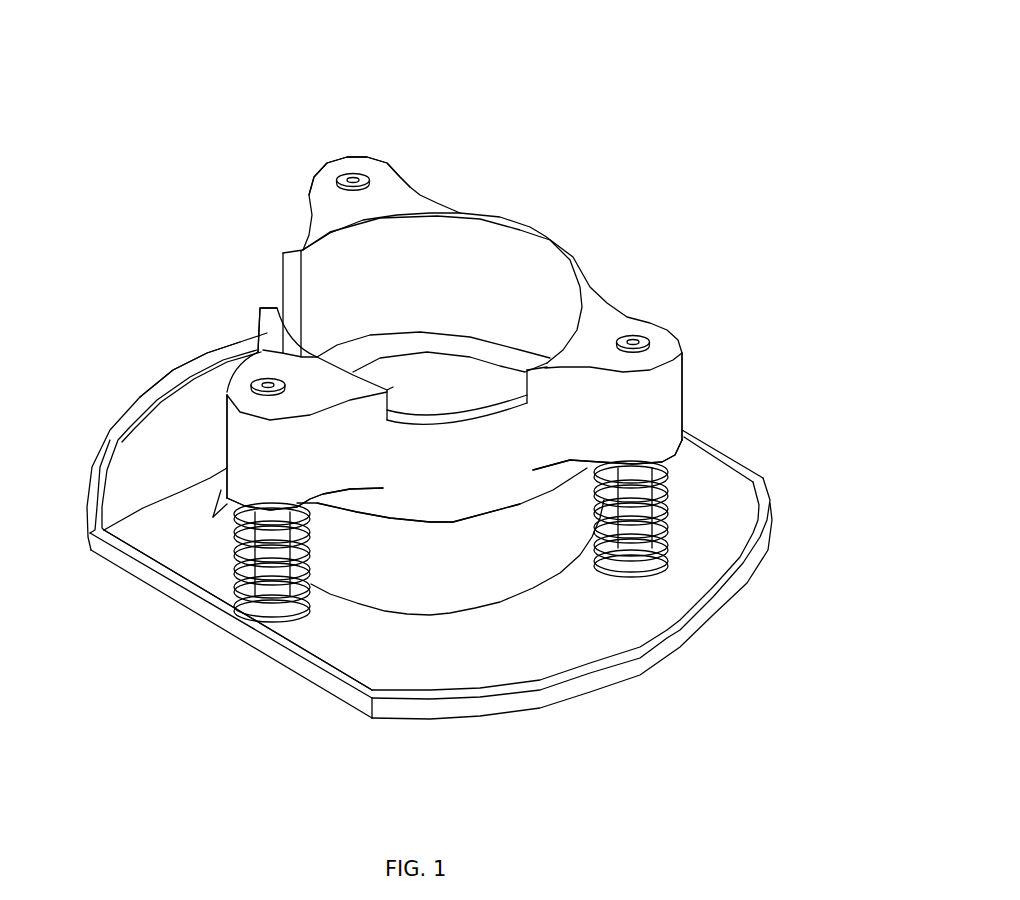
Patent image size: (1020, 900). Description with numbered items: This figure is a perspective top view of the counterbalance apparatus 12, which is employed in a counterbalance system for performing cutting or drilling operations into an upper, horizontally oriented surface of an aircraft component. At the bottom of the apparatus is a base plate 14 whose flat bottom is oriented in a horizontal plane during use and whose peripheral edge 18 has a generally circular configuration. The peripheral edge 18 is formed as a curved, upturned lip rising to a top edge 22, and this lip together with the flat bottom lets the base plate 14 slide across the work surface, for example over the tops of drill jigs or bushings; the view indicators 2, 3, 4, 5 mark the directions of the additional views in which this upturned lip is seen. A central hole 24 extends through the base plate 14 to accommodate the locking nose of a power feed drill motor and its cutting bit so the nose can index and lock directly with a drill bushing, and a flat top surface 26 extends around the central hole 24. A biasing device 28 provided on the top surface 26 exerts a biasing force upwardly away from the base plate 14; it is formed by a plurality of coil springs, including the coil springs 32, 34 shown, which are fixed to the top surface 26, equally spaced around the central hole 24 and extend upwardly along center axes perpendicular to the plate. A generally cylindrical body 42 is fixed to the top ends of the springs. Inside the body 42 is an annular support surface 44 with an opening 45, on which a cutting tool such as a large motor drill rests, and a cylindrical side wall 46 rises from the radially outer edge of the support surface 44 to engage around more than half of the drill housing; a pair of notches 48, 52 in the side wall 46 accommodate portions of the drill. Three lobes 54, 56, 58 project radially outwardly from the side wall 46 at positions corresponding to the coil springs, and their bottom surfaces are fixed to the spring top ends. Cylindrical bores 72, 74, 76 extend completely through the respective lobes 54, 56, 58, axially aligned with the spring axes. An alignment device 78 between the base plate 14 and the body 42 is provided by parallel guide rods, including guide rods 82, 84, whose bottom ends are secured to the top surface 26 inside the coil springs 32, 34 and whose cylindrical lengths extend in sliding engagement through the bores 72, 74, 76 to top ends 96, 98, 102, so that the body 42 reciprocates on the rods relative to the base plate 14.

The section view direction of FIG. 2 is at (672, 677).
The section view direction of FIG. 3 is at (142, 252).
The section view direction of FIG. 4 is at (175, 630).
The section view direction of FIG. 5 is at (528, 188).
The counterbalance apparatus 12 is at (607, 72).
The base plate 14 is at (720, 443).
The peripheral edge 18 is at (527, 705).
The top edge 22 is at (727, 593).
The central hole 24 is at (398, 580).
The top surface 26 is at (157, 420).
The biasing device 28 is at (288, 628).
The coil spring 32 is at (265, 590).
The coil spring 34 is at (667, 513).
The body 42 is at (548, 220).
The support surface 44 is at (427, 343).
The opening 45 is at (442, 363).
The side wall 46 is at (433, 490).
The notch 48 is at (263, 297).
The notch 52 is at (497, 400).
The lobe 54 is at (247, 452).
The lobe 56 is at (660, 387).
The lobe 58 is at (303, 197).
The cylindrical bore 72 is at (270, 378).
The cylindrical bore 74 is at (640, 341).
The cylindrical bore 76 is at (362, 180).
The alignment device 78 is at (237, 520).
The guide rod 82 is at (270, 558).
The guide rod 84 is at (638, 497).
The top end 96 is at (274, 382).
The top end 98 is at (630, 339).
The top end 102 is at (352, 176).